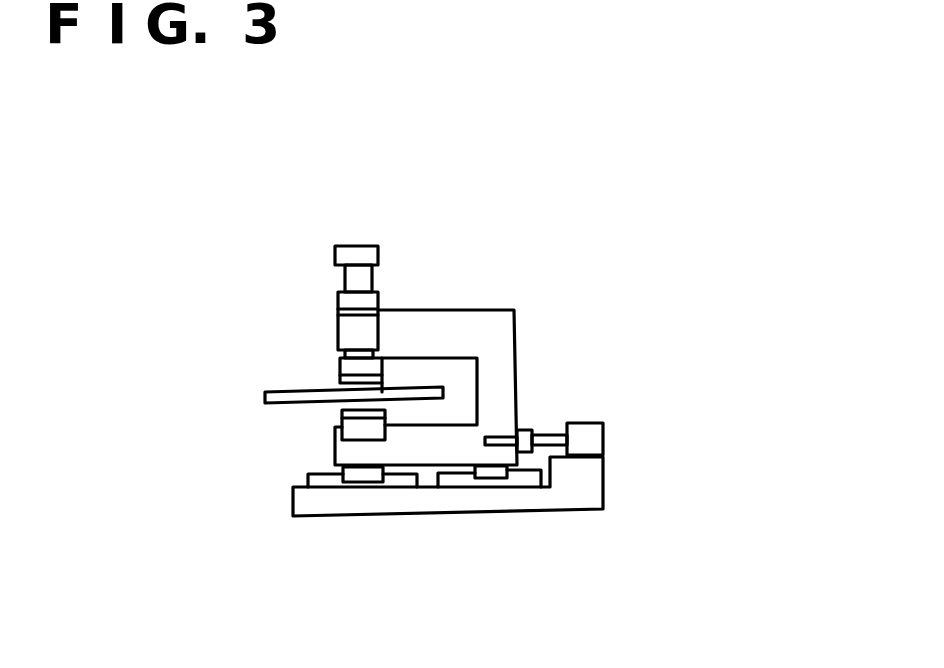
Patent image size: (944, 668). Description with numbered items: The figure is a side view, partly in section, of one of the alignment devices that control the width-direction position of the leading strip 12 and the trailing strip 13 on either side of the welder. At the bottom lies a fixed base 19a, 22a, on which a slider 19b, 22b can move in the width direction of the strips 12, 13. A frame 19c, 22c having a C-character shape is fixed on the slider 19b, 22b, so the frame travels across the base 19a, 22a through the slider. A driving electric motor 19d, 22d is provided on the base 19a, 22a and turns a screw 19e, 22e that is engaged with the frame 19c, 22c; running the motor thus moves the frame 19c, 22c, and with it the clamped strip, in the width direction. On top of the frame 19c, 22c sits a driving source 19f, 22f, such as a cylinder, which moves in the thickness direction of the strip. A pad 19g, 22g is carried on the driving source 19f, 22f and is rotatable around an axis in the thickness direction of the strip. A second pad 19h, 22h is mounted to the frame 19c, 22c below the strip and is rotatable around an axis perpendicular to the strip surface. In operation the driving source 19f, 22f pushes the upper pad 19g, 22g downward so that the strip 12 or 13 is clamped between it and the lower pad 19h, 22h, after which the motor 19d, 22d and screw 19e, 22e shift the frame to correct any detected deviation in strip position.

The leading strip 12 is at (290, 312).
The trailing strip 13 is at (274, 390).
The fixed base 19a is at (555, 484).
The fixed base 22a is at (603, 478).
The slider 19b is at (432, 536).
The slider 22b is at (478, 484).
The frame 19c is at (521, 350).
The frame 22c is at (516, 327).
The driving electric motor 19d is at (682, 421).
The driving electric motor 22d is at (603, 433).
The screw 19e is at (603, 384).
The screw 22e is at (547, 432).
The driving source 19f is at (465, 252).
The driving source 22f is at (374, 300).
The pad 19g is at (236, 273).
The pad 22g is at (340, 380).
The pad 19h is at (241, 438).
The pad 22h is at (342, 415).